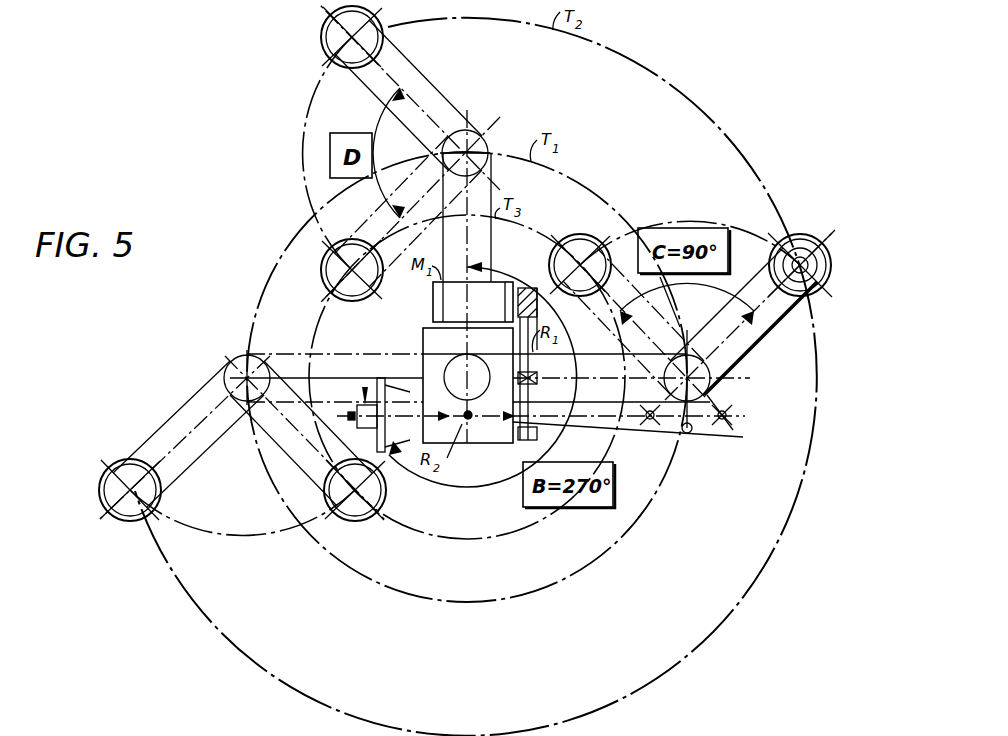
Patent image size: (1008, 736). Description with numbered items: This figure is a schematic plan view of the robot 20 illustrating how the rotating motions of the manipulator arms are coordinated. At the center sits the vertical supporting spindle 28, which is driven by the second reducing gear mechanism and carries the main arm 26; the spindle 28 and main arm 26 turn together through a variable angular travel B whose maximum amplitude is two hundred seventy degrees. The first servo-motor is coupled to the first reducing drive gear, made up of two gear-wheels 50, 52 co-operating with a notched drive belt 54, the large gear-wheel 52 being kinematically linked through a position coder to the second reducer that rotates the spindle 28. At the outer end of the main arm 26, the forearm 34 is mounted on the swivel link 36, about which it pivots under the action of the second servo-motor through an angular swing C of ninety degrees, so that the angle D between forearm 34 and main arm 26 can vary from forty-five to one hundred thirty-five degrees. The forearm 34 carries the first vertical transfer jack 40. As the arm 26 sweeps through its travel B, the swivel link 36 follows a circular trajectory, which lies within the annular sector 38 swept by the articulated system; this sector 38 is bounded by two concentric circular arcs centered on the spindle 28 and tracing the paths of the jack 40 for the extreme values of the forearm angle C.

The robot arm assembly 20 is at (276, 221).
The main arm 26 is at (628, 400).
The vertical supporting spindle 28 is at (458, 368).
The forearm 34 is at (758, 323).
The swivel link 36 is at (710, 393).
The annular sector 38 is at (621, 62).
The first vertical transfer jack 40 is at (821, 236).
The gear-wheel 50 is at (528, 288).
The large gear-wheel 52 is at (521, 428).
The notched drive belt 54 is at (532, 368).